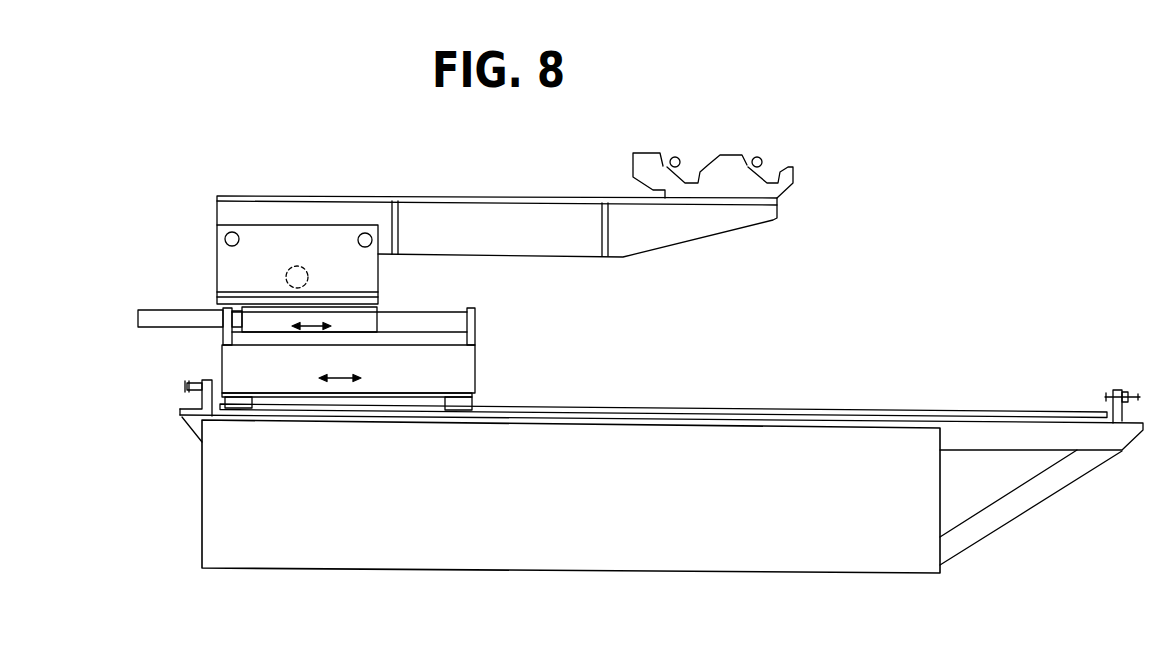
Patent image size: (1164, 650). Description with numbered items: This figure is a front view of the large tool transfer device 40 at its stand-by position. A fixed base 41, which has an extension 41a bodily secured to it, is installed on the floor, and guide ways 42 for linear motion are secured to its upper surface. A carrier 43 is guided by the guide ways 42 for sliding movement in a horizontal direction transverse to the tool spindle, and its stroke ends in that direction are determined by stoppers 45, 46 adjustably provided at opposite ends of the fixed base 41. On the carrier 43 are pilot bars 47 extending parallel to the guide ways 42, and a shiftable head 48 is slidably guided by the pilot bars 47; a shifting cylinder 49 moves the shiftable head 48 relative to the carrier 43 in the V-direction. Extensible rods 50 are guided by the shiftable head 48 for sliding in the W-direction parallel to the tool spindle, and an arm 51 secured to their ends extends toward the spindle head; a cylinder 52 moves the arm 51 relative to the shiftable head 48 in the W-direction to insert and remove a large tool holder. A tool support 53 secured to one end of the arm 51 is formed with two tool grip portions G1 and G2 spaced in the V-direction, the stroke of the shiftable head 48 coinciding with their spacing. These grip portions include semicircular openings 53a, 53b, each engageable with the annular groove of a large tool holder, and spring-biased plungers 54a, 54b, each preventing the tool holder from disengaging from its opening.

The tool transfer device 40 is at (798, 326).
The fixed base 41 is at (578, 572).
The extension 41a is at (985, 446).
The guide ways 42 is at (821, 409).
The carrier 43 is at (477, 366).
The stopper 45 is at (196, 384).
The stopper 46 is at (1112, 393).
The pilot bars 47 is at (428, 319).
The shiftable head 48 is at (379, 274).
The shifting cylinder 49 is at (172, 309).
The extensible rods 50 is at (226, 235).
The arm 51 is at (538, 241).
The cylinder 52 is at (286, 272).
The tool support 53 is at (632, 160).
The semicircular opening 53a is at (781, 167).
The semicircular opening 53b is at (702, 172).
The spring-biased plunger 54a is at (758, 157).
The spring-biased plunger 54b is at (672, 157).
The tool grip portion G1 is at (789, 135).
The tool grip portion G2 is at (688, 136).